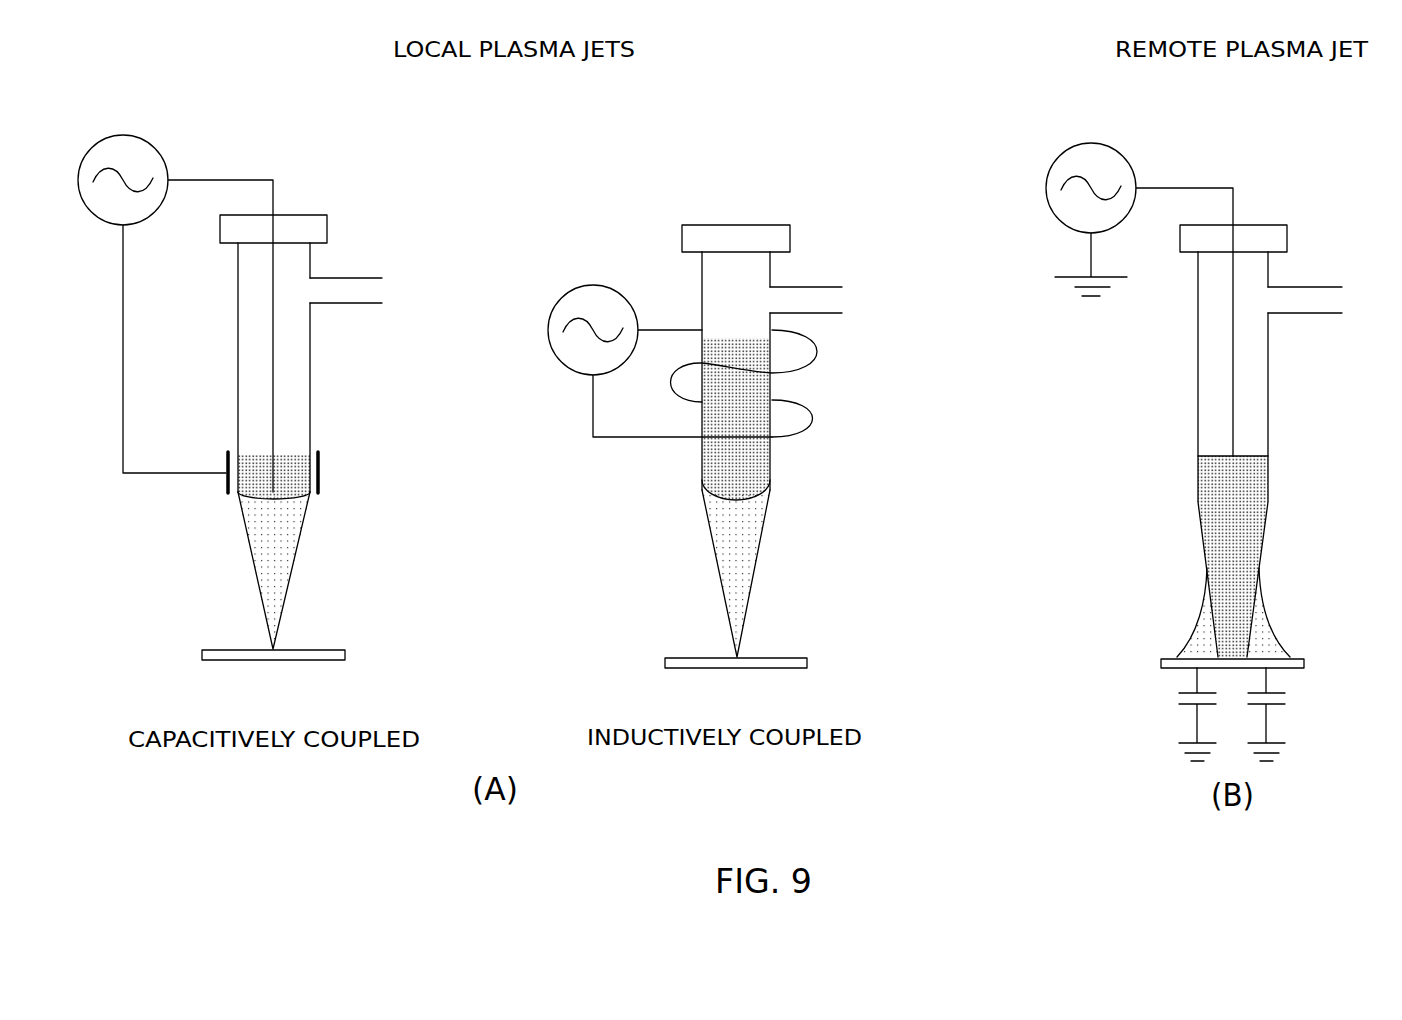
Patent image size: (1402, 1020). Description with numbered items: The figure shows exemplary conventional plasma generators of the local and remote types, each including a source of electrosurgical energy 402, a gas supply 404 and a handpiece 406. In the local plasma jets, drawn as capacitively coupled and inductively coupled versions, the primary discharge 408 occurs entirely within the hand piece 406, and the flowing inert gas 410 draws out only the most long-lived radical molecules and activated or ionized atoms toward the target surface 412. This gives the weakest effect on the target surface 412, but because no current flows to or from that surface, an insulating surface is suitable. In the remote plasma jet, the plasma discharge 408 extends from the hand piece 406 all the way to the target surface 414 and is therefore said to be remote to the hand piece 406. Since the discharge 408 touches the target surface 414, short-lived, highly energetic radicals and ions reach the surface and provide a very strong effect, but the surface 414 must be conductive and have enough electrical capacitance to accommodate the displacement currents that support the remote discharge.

The source of electrosurgical energy 402 is at (123, 135).
The gas supply 404 is at (328, 276).
The handpiece 406 is at (312, 347).
The primary discharge 408 is at (257, 482).
The flowing inert gas 410 is at (273, 570).
The target surface 412 is at (345, 657).
The target surface 414 is at (1306, 666).